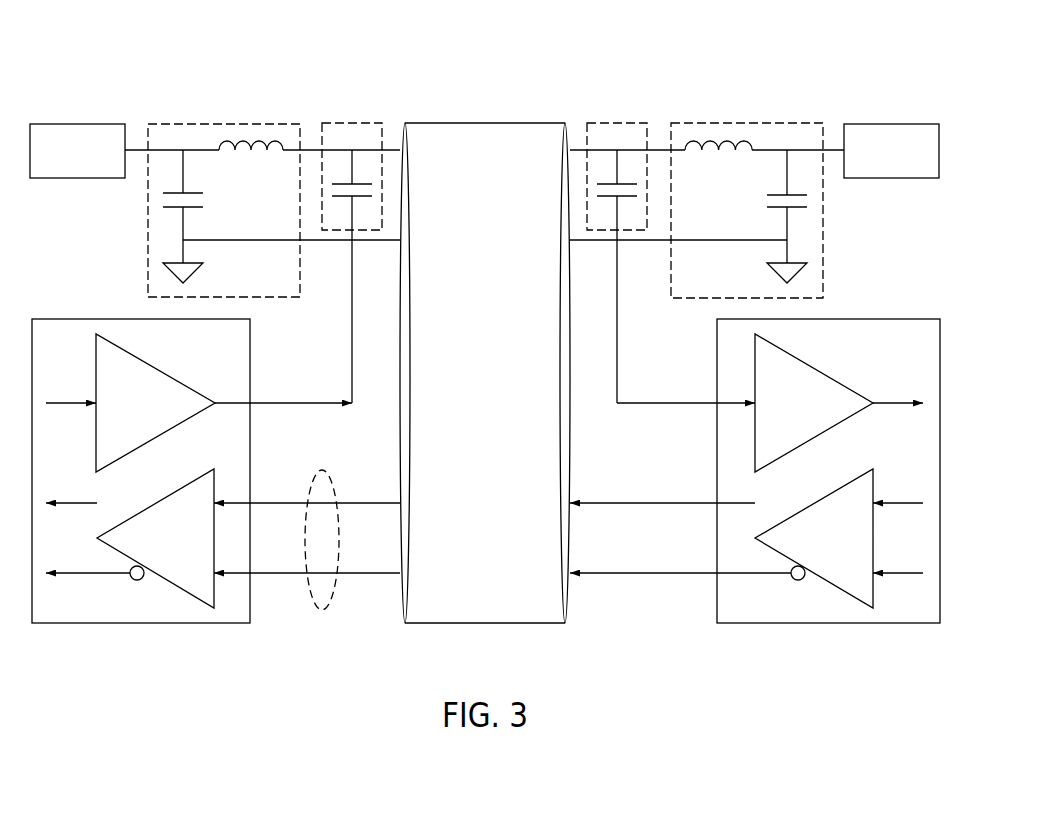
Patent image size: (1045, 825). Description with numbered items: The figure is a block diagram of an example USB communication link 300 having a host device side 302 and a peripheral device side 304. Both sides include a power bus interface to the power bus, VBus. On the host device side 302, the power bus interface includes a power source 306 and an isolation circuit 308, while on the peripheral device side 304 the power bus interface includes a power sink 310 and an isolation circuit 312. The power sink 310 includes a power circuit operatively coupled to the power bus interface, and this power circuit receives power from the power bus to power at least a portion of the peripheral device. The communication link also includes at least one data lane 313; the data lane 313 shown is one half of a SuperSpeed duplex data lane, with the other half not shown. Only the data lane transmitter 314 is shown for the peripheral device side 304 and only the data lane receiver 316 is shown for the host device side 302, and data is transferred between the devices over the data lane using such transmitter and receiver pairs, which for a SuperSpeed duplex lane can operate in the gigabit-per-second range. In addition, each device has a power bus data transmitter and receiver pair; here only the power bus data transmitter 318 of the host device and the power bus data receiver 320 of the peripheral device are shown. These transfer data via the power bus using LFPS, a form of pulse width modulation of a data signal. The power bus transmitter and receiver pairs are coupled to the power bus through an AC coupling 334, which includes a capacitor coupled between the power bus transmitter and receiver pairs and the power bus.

The USB communication link 300 is at (115, 45).
The host device side 302 is at (340, 87).
The peripheral device side 304 is at (630, 87).
The power source 306 is at (78, 124).
The isolation circuit 308 is at (225, 124).
The power sink 310 is at (893, 124).
The isolation circuit 312 is at (748, 123).
The data lane 313 is at (322, 470).
The data lane transmitter 314 is at (836, 491).
The data lane receiver 316 is at (177, 491).
The power bus data transmitter 318 is at (157, 369).
The power bus data receiver 320 is at (815, 369).
The AC coupling 334 is at (352, 123).